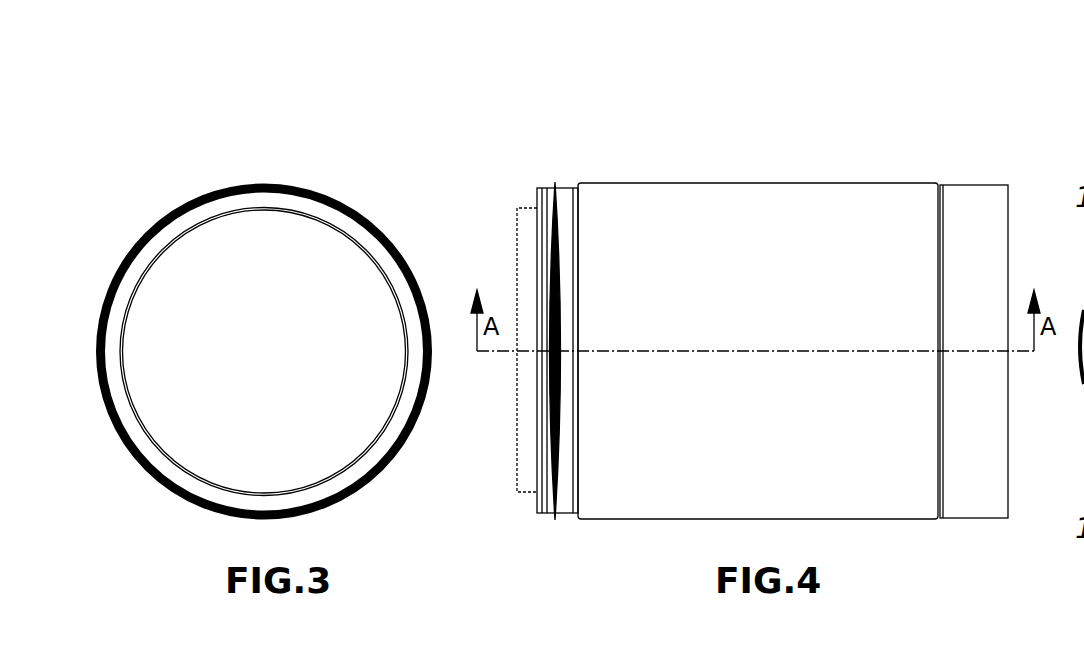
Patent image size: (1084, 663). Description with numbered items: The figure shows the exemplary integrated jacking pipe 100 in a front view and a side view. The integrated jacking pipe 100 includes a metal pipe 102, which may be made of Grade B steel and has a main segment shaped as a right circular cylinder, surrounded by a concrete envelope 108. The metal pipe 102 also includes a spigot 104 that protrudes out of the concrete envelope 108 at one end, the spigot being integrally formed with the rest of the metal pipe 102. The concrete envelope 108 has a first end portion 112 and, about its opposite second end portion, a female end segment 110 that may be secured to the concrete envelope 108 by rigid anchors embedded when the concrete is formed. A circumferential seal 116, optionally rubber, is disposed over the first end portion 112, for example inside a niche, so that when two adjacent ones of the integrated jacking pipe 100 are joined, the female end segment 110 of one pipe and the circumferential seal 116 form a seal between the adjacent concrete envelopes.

In FIG. 3, the integrated jacking pipe 100 is at (243, 120).
In FIG. 4, the integrated jacking pipe 100 is at (796, 103).
In FIG. 3, the metal pipe 102 is at (390, 413).
In FIG. 4, the spigot 104 is at (525, 235).
In FIG. 3, the concrete envelope 108 is at (336, 218).
In FIG. 4, the concrete envelope 108 is at (693, 200).
In FIG. 4, the female end segment 110 is at (992, 222).
In FIG. 4, the first end portion 112 is at (543, 500).
In FIG. 3, the circumferential seal 116 is at (207, 187).
In FIG. 4, the circumferential seal 116 is at (554, 184).